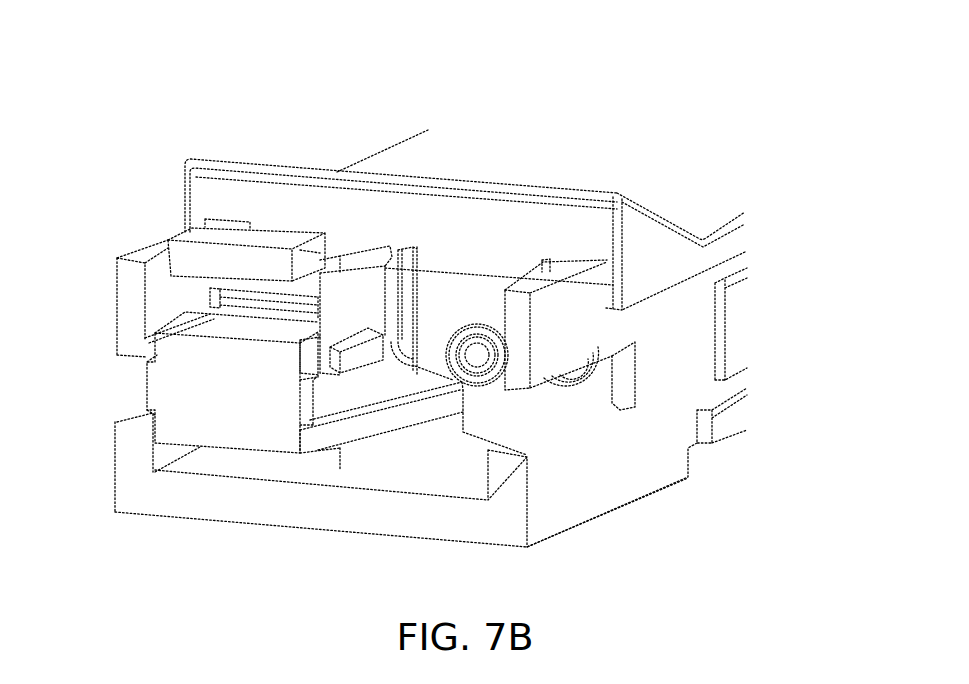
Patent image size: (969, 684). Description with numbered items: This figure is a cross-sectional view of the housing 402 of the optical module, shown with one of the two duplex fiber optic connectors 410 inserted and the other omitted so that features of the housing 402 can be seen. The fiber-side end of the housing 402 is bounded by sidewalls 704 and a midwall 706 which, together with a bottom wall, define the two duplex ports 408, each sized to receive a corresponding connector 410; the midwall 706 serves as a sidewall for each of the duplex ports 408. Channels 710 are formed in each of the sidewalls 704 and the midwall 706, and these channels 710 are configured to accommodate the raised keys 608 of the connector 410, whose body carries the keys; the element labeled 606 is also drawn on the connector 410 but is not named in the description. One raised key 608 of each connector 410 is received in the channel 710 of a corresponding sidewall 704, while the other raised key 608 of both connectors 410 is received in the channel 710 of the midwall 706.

The housing 402 is at (300, 88).
The duplex ports 408 is at (228, 462).
The duplex fiber optic connector 410 is at (160, 208).
The latch block 606 is at (227, 245).
The raised keys 608 is at (147, 378).
The sidewalls 704 is at (117, 300).
The midwall 706 is at (417, 408).
The channels 710 is at (130, 387).